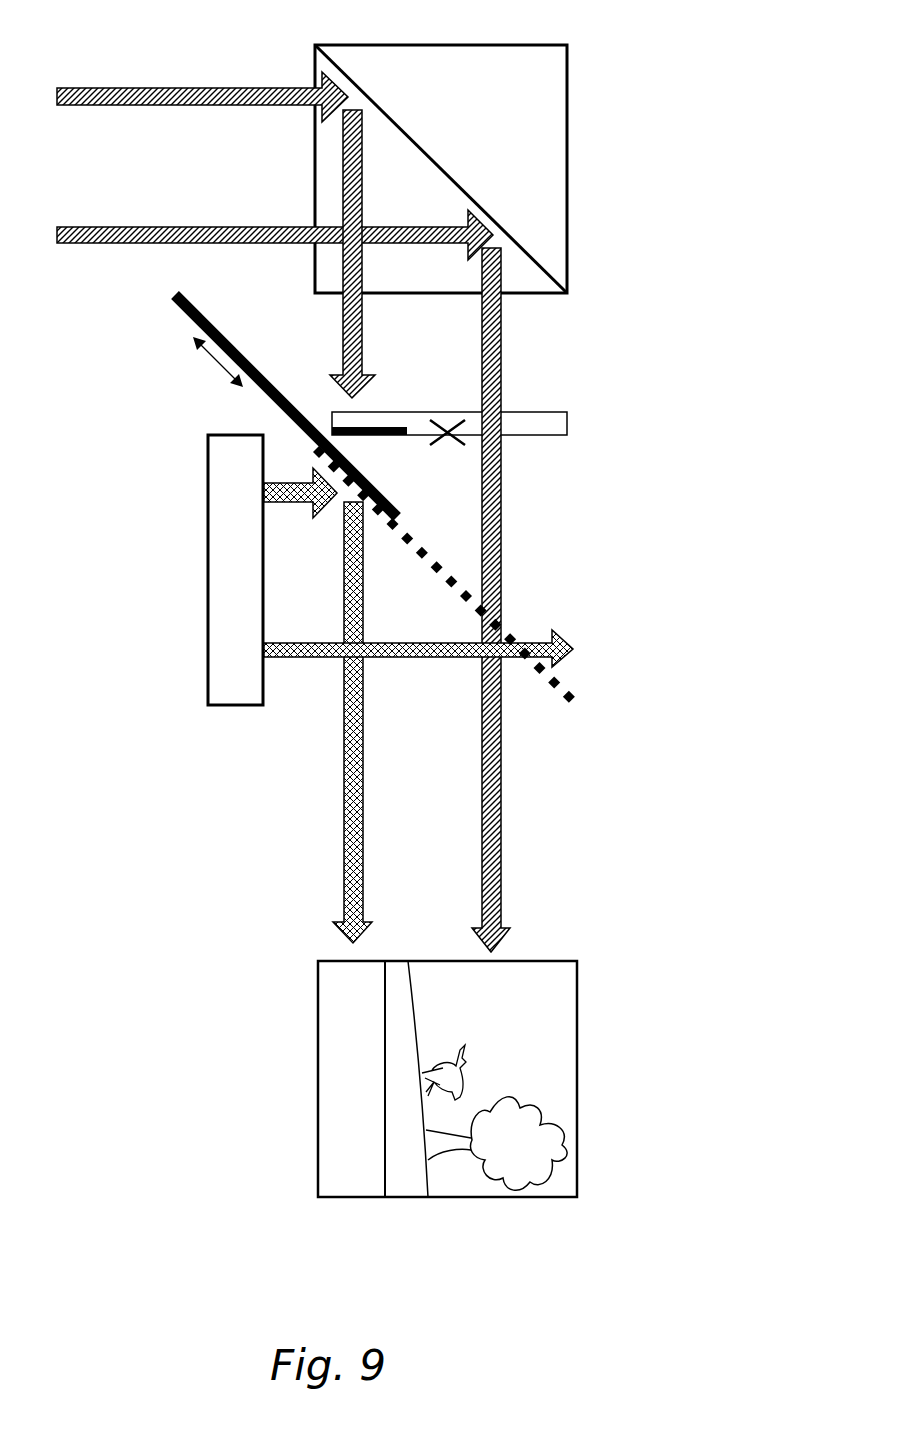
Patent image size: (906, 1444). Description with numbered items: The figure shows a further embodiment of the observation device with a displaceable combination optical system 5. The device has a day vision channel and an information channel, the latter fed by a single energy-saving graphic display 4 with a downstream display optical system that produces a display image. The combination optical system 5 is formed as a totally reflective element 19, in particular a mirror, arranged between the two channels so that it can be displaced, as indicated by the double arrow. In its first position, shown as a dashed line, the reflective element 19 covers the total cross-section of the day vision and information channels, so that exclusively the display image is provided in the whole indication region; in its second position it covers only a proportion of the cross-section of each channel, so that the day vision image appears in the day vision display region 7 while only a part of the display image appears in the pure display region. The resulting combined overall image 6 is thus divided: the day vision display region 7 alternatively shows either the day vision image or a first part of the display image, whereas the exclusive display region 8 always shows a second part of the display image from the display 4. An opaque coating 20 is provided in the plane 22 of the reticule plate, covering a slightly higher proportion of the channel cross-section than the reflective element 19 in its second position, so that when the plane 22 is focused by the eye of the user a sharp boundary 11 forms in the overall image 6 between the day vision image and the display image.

The reflective element 19 is at (187, 313).
The combination optical system 5 is at (173, 383).
The opaque coating 20 is at (385, 437).
The plane of the reticule plate 22 is at (523, 433).
The graphic display 4 is at (225, 597).
The combined overall image 6 is at (382, 1112).
The exclusive display region 8 is at (345, 1219).
The sharp boundary 11 is at (385, 1170).
The day vision display region 7 is at (546, 1219).